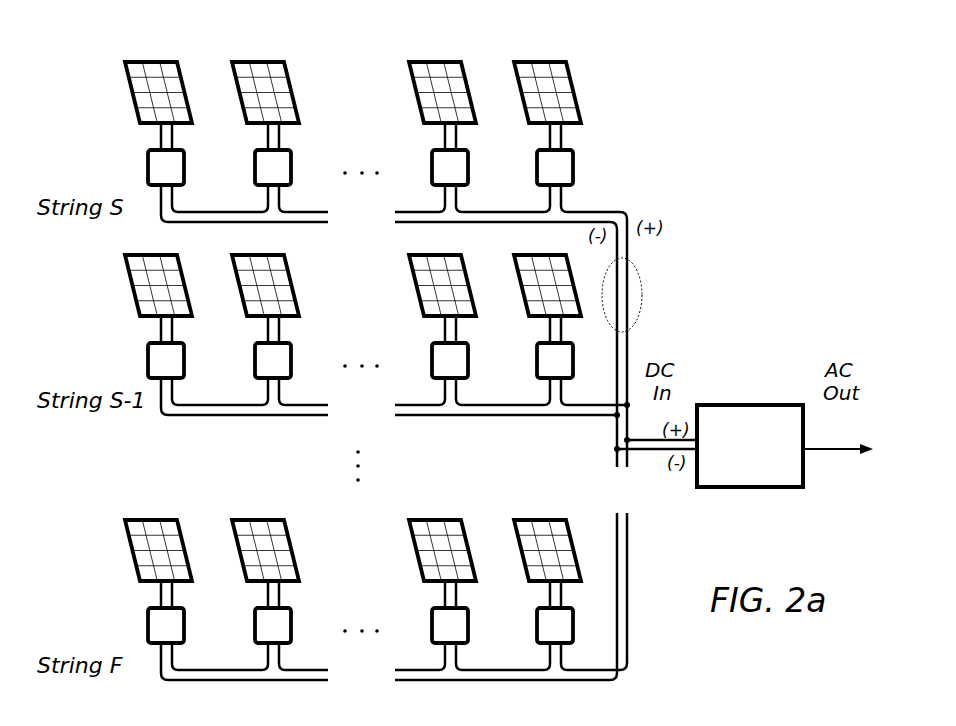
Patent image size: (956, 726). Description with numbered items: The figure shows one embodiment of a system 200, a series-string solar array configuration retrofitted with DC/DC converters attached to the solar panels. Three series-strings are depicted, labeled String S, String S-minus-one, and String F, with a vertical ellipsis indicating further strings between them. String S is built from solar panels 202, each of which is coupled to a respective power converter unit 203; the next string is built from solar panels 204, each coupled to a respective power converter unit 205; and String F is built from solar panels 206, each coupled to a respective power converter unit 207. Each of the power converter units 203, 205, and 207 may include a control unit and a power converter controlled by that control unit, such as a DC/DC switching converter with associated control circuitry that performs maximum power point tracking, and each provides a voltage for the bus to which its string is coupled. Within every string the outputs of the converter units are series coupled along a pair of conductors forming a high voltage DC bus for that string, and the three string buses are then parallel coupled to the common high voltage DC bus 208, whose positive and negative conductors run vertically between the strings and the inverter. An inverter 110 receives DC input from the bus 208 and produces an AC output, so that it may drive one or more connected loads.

The system 200 is at (648, 96).
The solar panel 202 is at (115, 104).
The power converter unit 203 is at (127, 164).
The solar panel 204 is at (117, 285).
The power converter unit 205 is at (113, 347).
The solar panel 206 is at (117, 550).
The power converter unit 207 is at (113, 612).
The high voltage DC bus 208 is at (642, 288).
The inverter 110 is at (792, 482).